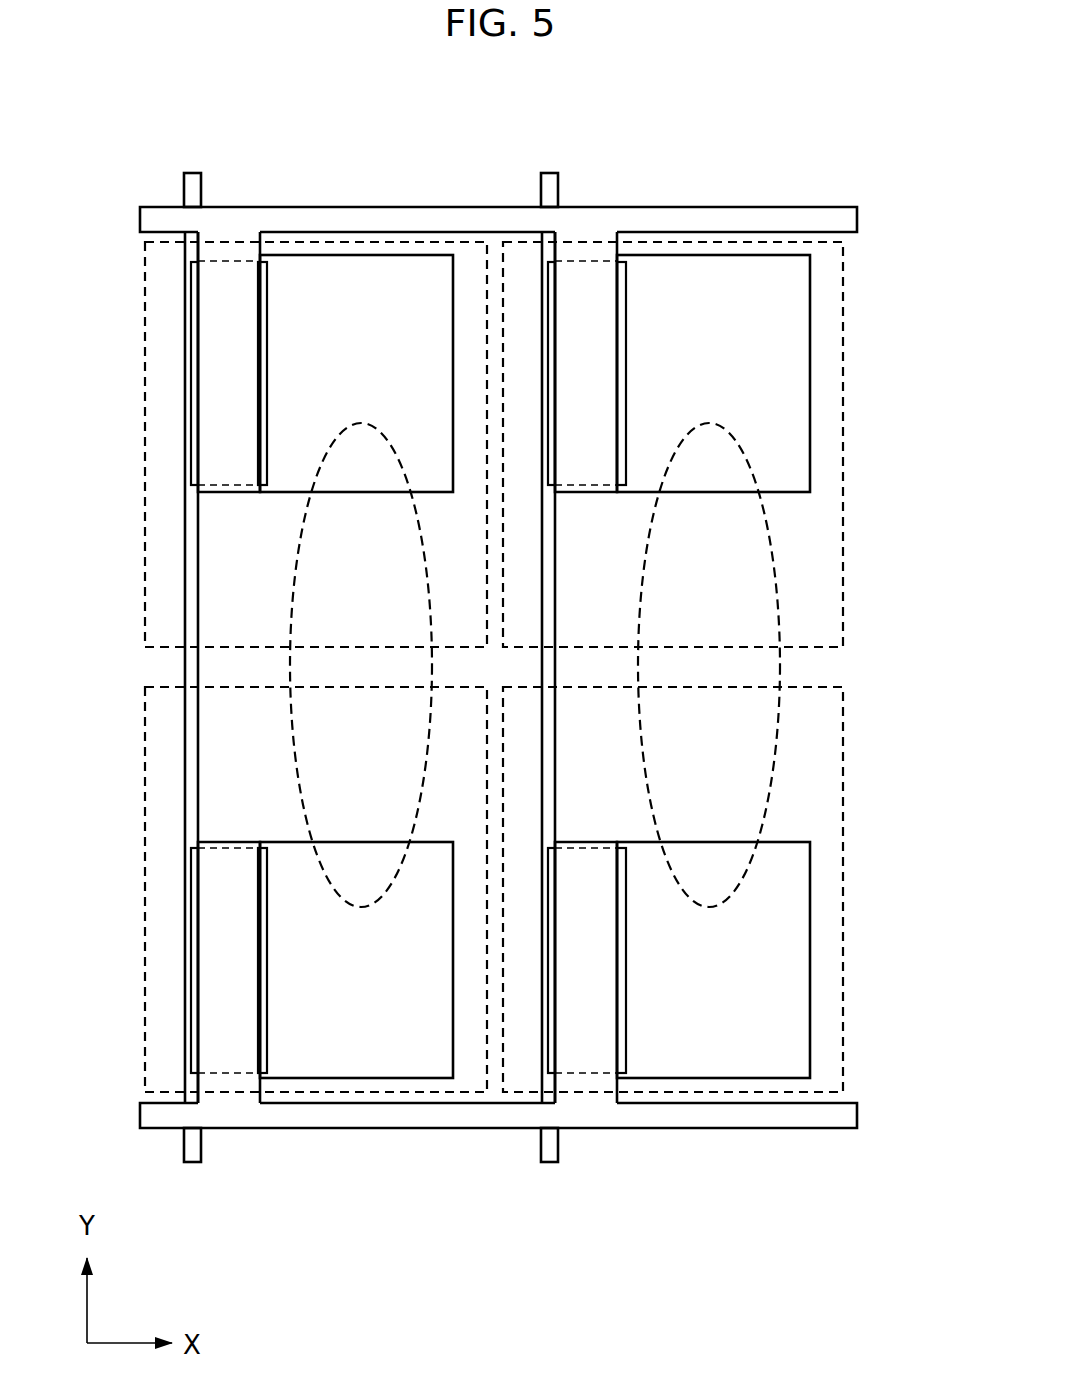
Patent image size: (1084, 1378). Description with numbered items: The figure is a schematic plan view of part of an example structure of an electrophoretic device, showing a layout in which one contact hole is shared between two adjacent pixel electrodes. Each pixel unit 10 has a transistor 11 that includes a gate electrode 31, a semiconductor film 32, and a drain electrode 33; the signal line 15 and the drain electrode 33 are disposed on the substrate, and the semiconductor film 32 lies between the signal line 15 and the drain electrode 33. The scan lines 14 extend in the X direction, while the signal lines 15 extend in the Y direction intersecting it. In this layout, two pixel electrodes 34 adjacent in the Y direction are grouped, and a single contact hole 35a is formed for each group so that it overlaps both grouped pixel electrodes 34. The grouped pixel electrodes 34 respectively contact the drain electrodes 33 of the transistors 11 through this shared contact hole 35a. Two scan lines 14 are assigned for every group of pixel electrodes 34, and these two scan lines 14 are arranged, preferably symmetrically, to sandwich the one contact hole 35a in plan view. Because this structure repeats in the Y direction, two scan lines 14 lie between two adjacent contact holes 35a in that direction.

The pixel unit 10 is at (140, 197).
The transistor 11 is at (530, 232).
The scan line 14 is at (140, 222).
The signal line 15 is at (194, 1148).
The gate electrode 31 is at (227, 388).
The semiconductor film 32 is at (267, 342).
The drain electrode 33 is at (328, 362).
The pixel electrode 34 is at (405, 232).
The contact hole 35a is at (363, 907).